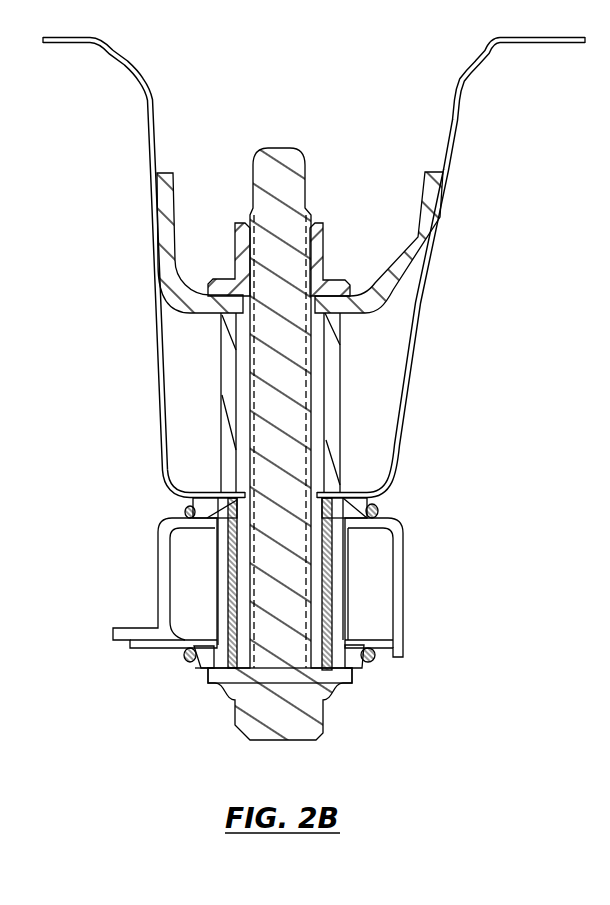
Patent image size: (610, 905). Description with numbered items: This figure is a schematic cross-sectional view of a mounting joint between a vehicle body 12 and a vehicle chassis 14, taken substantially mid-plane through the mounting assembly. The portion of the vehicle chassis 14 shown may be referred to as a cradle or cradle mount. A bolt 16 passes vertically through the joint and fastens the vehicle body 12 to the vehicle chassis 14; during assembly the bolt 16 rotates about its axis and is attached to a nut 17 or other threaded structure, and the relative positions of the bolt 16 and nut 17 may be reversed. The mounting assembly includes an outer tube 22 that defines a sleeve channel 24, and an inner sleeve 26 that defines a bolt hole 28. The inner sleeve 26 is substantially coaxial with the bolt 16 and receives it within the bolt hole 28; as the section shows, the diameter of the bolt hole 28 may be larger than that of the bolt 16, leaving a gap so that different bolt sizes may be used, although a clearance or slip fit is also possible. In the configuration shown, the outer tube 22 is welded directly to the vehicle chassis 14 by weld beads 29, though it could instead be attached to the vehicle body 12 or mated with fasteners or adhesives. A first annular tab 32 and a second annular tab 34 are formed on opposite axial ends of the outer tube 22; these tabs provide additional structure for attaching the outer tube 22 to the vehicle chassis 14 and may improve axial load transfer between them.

The vehicle body 12 is at (165, 393).
The vehicle chassis 14 is at (400, 620).
The bolt 16 is at (293, 348).
The nut 17 is at (318, 250).
The outer tube 22 is at (217, 557).
The sleeve channel 24 is at (242, 587).
The inner sleeve 26 is at (232, 634).
The bolt hole 28 is at (315, 742).
The weld beads 29 is at (187, 655).
The first annular tab 32 is at (192, 664).
The second annular tab 34 is at (193, 502).